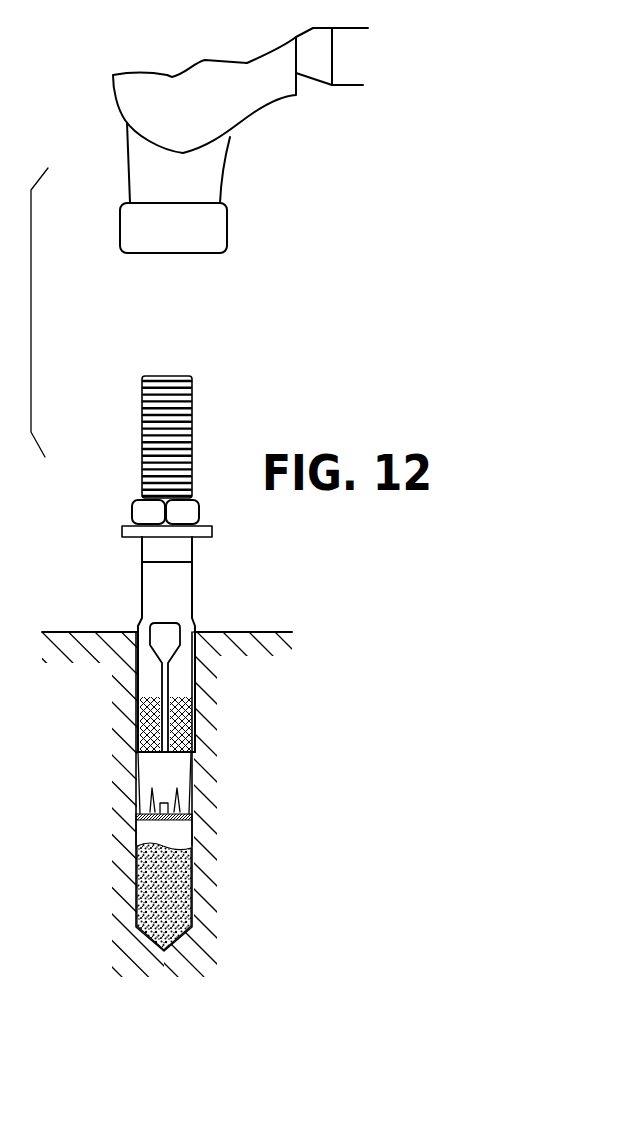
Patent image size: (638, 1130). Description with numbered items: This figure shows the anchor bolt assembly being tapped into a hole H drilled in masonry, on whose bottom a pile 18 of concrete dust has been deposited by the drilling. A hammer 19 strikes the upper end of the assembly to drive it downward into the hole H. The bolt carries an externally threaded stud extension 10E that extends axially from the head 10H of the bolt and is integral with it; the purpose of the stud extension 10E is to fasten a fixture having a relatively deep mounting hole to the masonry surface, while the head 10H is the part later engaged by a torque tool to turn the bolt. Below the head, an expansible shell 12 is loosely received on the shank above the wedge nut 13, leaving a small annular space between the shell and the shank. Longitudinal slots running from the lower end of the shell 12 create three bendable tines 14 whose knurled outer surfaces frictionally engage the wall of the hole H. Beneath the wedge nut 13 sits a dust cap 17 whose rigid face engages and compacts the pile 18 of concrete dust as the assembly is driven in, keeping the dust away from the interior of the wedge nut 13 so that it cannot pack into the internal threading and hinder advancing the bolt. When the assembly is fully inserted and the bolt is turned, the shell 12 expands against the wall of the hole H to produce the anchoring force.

The hammer 19 is at (132, 225).
The externally threaded stud extension 10E is at (148, 418).
The head of the bolt 10H is at (148, 513).
The expansible shell 12 is at (148, 588).
The bendable tines 14 is at (195, 715).
The wedge nut 13 is at (178, 773).
The dust cap 17 is at (150, 822).
The hole H is at (185, 833).
The pile of concrete dust 18 is at (137, 892).